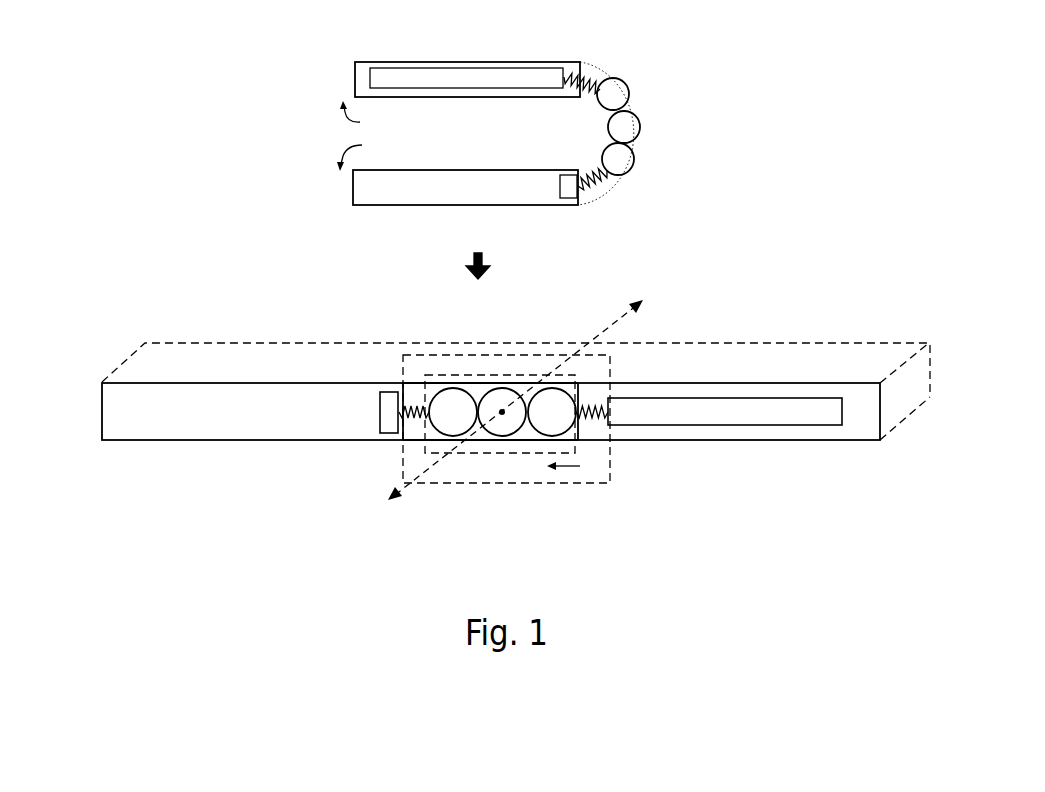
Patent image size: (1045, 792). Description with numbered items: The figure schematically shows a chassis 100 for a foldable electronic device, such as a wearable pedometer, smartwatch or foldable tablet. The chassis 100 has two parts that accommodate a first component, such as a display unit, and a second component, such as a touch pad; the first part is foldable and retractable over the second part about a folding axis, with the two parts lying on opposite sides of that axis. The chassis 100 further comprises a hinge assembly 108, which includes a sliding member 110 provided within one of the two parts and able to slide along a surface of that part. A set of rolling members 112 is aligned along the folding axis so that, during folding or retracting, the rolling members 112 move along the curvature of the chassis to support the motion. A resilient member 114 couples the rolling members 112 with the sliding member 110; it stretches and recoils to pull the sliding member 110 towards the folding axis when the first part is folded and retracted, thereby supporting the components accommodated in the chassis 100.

The chassis 100 is at (120, 138).
The hinge assembly 108 is at (500, 483).
The sliding member 110 is at (680, 398).
The set of rolling members 112 is at (443, 375).
The resilient member 114 is at (591, 403).